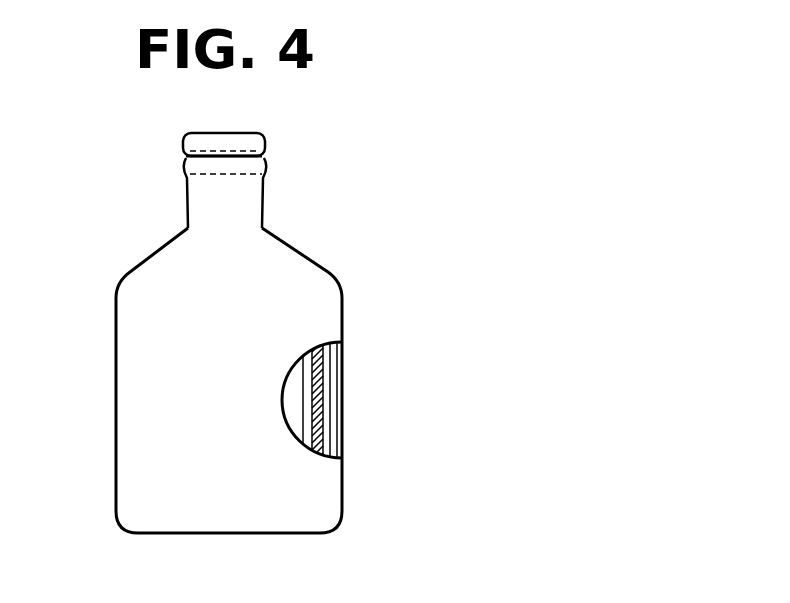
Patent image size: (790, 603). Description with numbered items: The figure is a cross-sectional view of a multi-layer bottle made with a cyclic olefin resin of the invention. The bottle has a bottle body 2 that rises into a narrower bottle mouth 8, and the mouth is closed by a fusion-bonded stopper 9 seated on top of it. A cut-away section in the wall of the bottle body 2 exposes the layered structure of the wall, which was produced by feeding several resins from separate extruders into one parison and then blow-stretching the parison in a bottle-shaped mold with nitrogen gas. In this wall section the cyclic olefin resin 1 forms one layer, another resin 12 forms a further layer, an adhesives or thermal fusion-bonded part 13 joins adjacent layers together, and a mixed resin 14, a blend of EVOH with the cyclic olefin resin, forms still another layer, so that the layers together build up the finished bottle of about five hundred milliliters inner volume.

The bottle body 2 is at (110, 340).
The bottle mouth 8 is at (265, 197).
The fusion-bonded stopper 9 is at (229, 149).
The cyclic olefin resin 1 is at (320, 362).
The another resin 12 is at (338, 388).
The adhesives or thermal fusion-bonded part 13 is at (323, 408).
The mixed resin 14 is at (327, 440).